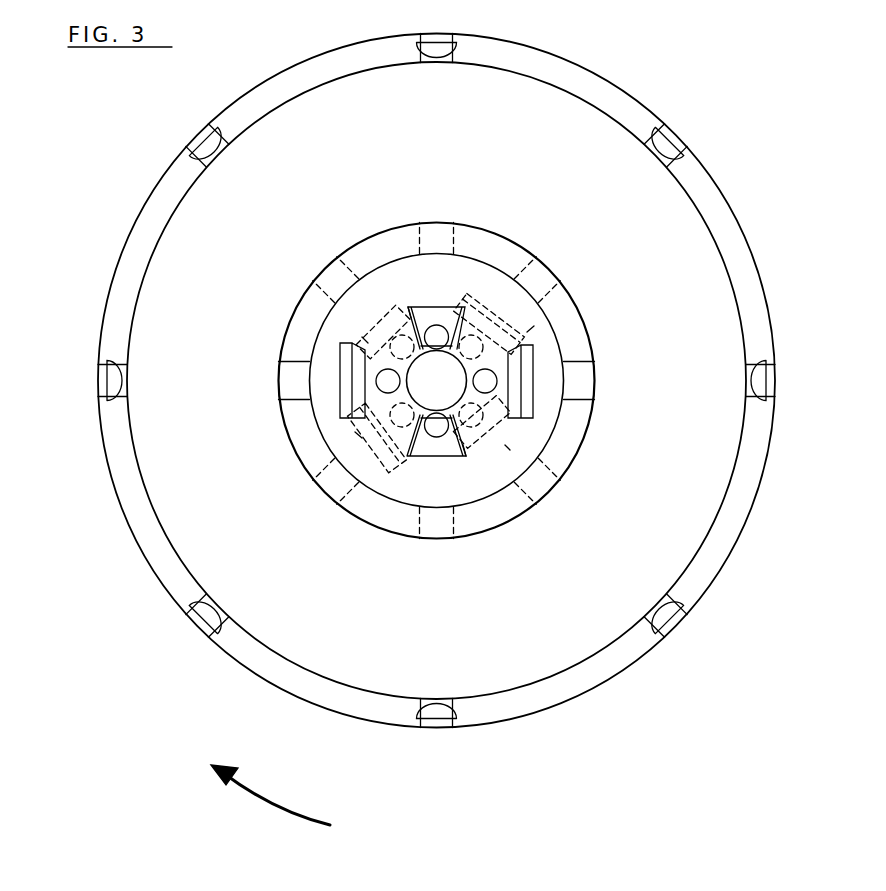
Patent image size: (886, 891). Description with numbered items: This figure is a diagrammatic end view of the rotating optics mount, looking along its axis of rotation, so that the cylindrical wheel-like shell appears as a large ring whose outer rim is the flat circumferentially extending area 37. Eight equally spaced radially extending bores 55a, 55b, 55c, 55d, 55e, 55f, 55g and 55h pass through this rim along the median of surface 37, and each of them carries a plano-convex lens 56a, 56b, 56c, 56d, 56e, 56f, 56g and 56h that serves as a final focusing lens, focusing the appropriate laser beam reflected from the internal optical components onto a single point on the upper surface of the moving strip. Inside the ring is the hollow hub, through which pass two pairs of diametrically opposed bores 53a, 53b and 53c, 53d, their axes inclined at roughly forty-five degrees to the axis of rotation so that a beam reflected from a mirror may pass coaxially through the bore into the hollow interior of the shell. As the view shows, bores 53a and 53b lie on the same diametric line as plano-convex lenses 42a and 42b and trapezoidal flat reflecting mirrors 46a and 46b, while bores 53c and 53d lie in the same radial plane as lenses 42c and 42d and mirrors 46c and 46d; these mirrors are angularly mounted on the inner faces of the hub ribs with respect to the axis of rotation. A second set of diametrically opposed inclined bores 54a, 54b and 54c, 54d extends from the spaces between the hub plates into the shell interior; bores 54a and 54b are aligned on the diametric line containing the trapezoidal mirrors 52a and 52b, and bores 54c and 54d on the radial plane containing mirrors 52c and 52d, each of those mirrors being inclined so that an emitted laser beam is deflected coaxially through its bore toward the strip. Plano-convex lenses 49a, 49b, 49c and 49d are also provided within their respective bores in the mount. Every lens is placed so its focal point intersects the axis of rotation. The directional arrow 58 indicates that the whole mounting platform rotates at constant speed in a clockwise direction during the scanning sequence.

The flat circumferentially extending area 37 is at (152, 570).
The radially extending bore 55a is at (101, 393).
The radially extending bore 55b is at (189, 146).
The radially extending bore 55c is at (427, 34).
The radially extending bore 55d is at (684, 141).
The radially extending bore 55e is at (772, 372).
The radially extending bore 55f is at (670, 633).
The radially extending bore 55g is at (445, 727).
The radially extending bore 55h is at (198, 626).
The plano-convex lens 56a is at (122, 381).
The plano-convex lens 56b is at (220, 147).
The plano-convex lens 56c is at (438, 53).
The plano-convex lens 56d is at (662, 153).
The plano-convex lens 56e is at (758, 383).
The plano-convex lens 56f is at (656, 616).
The plano-convex lens 56g is at (437, 714).
The plano-convex lens 56h is at (215, 613).
The bore 53a is at (281, 386).
The bore 53b is at (590, 386).
The bore 53c is at (330, 492).
The bore 53d is at (546, 283).
The bore 54a is at (437, 222).
The bore 54b is at (445, 538).
The bore 54c is at (337, 280).
The bore 54d is at (545, 492).
The trapezoidal-shaped flat reflecting mirror 46a is at (340, 356).
The trapezoidal-shaped flat reflecting mirror 46b is at (522, 366).
The trapezoidal-shaped flat reflecting mirror 46c is at (357, 435).
The trapezoidal-shaped flat reflecting mirror 46d is at (532, 330).
The plano-convex lens 49a is at (435, 337).
The plano-convex lens 49b is at (437, 427).
The plano-convex lens 49c is at (400, 320).
The plano-convex lens 49d is at (472, 430).
The plano-convex lens 42a is at (396, 378).
The plano-convex lens 42b is at (478, 384).
The plano-convex lens 42c is at (347, 421).
The plano-convex lens 42d is at (461, 306).
The trapezoidal-shaped flat reflecting mirror 52a is at (410, 306).
The trapezoidal-shaped flat reflecting mirror 52b is at (430, 459).
The trapezoidal-shaped flat reflecting mirror 52c is at (366, 336).
The trapezoidal-shaped flat reflecting mirror 52d is at (507, 446).
The directional arrow 58 is at (278, 808).